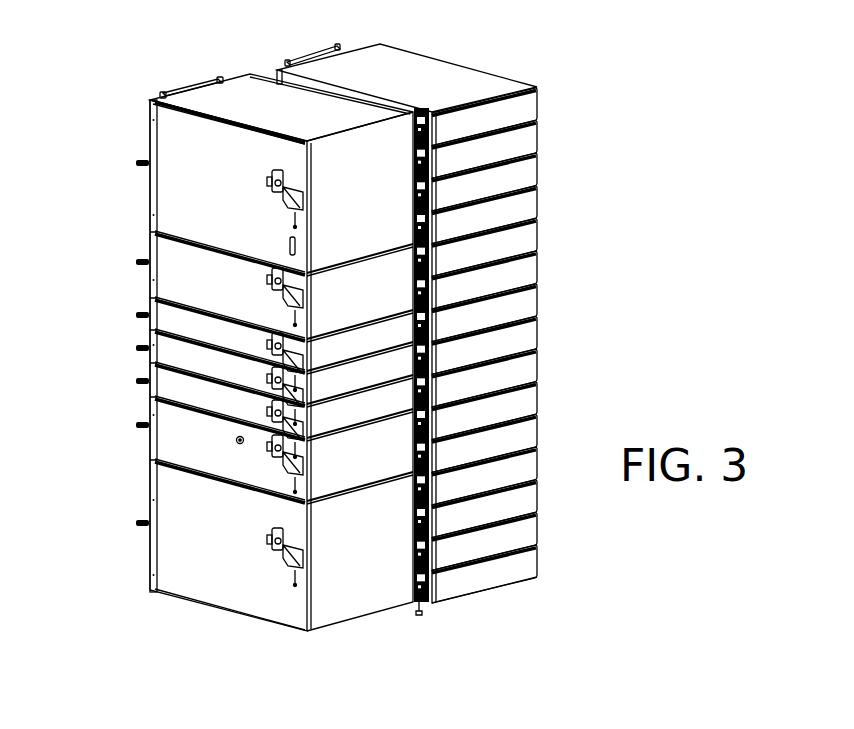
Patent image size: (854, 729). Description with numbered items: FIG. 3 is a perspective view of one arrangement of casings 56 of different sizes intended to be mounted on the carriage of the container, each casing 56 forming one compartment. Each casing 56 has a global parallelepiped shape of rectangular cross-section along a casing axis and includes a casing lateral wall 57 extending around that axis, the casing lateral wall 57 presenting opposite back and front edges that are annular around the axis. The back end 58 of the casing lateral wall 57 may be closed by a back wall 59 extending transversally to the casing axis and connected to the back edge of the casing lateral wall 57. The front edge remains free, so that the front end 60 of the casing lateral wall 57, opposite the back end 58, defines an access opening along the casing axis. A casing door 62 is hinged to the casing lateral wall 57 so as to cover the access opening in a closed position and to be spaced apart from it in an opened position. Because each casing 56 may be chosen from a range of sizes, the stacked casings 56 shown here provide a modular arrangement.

The casing 56 is at (178, 265).
The casing lateral wall 57 is at (178, 137).
The back end 58 is at (204, 74).
The back wall 59 is at (150, 100).
The front end 60 is at (367, 118).
The casing door 62 is at (378, 205).